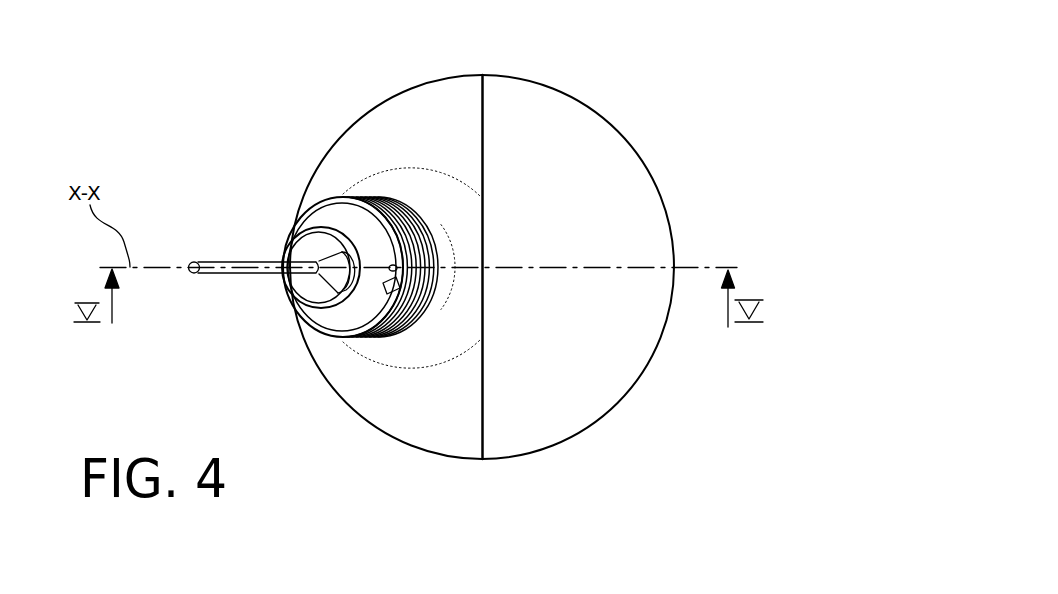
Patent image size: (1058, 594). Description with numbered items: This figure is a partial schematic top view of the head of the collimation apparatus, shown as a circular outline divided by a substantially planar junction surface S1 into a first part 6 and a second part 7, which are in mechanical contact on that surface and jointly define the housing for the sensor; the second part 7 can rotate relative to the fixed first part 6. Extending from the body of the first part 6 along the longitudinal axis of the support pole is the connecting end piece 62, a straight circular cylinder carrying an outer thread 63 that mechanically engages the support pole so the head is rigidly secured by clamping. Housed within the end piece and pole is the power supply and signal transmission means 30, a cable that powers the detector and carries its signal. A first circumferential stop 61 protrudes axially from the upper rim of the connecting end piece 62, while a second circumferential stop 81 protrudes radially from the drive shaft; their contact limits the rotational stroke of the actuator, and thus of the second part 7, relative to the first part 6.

The first part 6 is at (454, 411).
The second part 7 is at (502, 383).
The junction surface S1 is at (485, 423).
The power supply and signal transmission means 30 is at (213, 262).
The first circumferential stop 61 is at (393, 278).
The connecting end piece 62 is at (328, 322).
The outer thread 63 is at (409, 201).
The second circumferential stop 81 is at (390, 266).